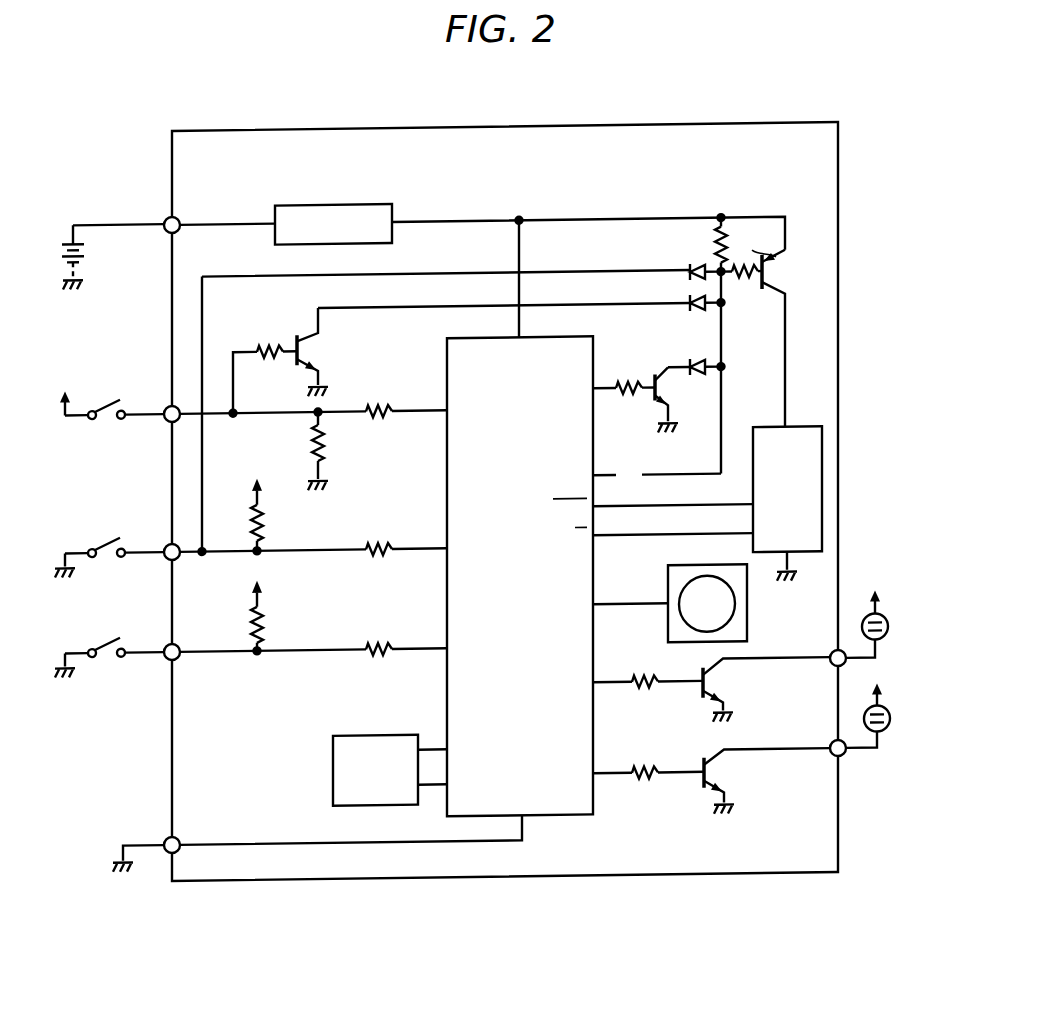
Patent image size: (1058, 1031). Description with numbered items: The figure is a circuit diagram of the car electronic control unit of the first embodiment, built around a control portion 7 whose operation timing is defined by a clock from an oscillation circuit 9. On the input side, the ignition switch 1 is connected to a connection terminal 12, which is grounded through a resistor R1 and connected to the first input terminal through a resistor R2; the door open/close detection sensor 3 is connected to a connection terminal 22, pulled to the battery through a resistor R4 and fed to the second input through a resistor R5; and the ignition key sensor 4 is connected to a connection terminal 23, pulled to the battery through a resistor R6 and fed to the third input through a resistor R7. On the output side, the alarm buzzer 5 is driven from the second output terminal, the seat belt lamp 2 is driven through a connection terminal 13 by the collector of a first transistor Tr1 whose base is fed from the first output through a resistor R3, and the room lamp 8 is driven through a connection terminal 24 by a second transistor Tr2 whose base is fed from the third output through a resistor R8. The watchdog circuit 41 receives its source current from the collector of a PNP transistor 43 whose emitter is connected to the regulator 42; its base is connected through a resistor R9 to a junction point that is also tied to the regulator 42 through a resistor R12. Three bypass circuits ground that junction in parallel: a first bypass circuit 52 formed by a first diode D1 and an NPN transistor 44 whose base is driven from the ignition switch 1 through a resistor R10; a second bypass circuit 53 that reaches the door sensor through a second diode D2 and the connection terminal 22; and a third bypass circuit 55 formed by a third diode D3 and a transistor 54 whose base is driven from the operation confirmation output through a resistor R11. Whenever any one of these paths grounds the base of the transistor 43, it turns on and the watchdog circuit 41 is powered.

The ignition switch 1 is at (107, 430).
The seat belt lamp 2 is at (890, 637).
The door open/close detection sensor 3 is at (107, 568).
The ignition key sensor 4 is at (107, 668).
The alarm buzzer 5 is at (668, 589).
The control portion 7 is at (447, 381).
The room lamp 8 is at (892, 729).
The oscillation circuit 9 is at (333, 773).
The connection terminal 12 is at (166, 410).
The connection terminal 13 is at (832, 661).
The connection terminal 22 is at (166, 548).
The connection terminal 23 is at (166, 649).
The connection terminal 24 is at (832, 751).
The watchdog circuit 41 is at (808, 434).
The regulator 42 is at (331, 207).
The transistor 43 is at (788, 281).
The transistor 44 is at (305, 354).
The first bypass circuit 52 is at (360, 315).
The second bypass circuit 53 is at (422, 273).
The transistor 54 is at (650, 418).
The third bypass circuit 55 is at (666, 368).
The resistor R1 is at (303, 451).
The resistor R2 is at (380, 426).
The resistor R3 is at (645, 697).
The resistor R4 is at (275, 514).
The resistor R5 is at (380, 564).
The resistor R6 is at (275, 615).
The resistor R7 is at (380, 664).
The resistor R8 is at (645, 788).
The resistor R9 is at (741, 284).
The resistor R10 is at (265, 366).
The resistor R11 is at (628, 383).
The resistor R12 is at (694, 245).
The first diode D1 is at (690, 307).
The second diode D2 is at (690, 275).
The third diode D3 is at (700, 402).
The first transistor Tr1 is at (722, 691).
The second transistor Tr2 is at (724, 781).